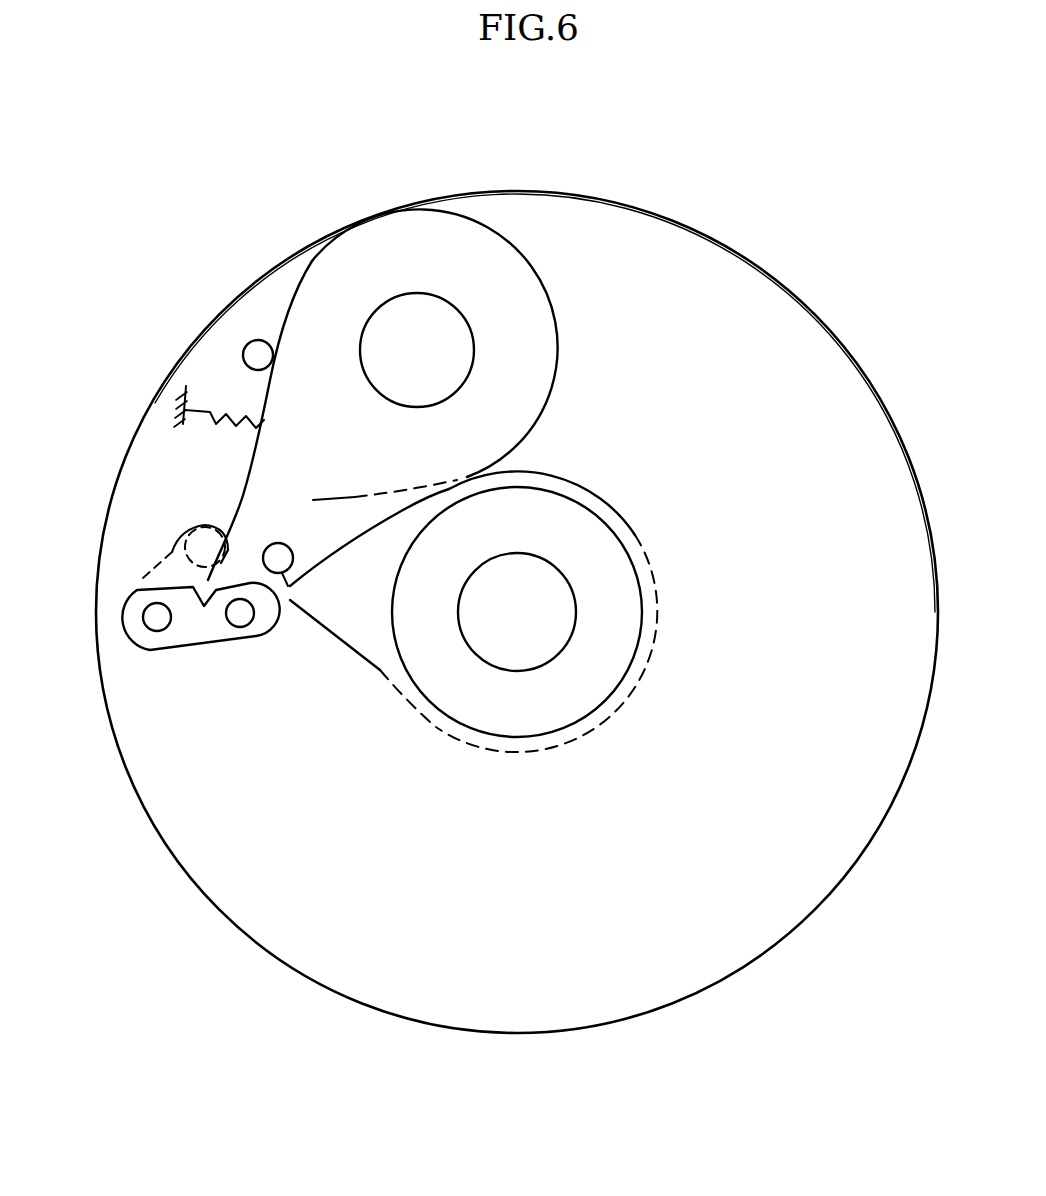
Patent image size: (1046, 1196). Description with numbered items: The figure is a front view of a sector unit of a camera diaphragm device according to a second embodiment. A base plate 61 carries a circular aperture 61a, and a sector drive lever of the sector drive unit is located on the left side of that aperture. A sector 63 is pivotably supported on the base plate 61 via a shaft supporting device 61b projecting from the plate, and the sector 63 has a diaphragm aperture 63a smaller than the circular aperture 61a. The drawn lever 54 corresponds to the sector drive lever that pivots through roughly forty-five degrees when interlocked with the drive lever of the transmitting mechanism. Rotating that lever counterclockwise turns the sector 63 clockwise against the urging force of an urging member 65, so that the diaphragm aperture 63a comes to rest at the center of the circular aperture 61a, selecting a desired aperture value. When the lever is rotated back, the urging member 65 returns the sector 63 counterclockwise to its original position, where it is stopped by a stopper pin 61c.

The lever 54 is at (172, 552).
The base plate 61 is at (648, 233).
The circular aperture 61a is at (612, 525).
The shaft supporting device 61b is at (288, 600).
The stopper pin 61c is at (250, 342).
The sector 63 is at (580, 473).
The diaphragm aperture 63a is at (446, 294).
The urging member 65 is at (226, 426).